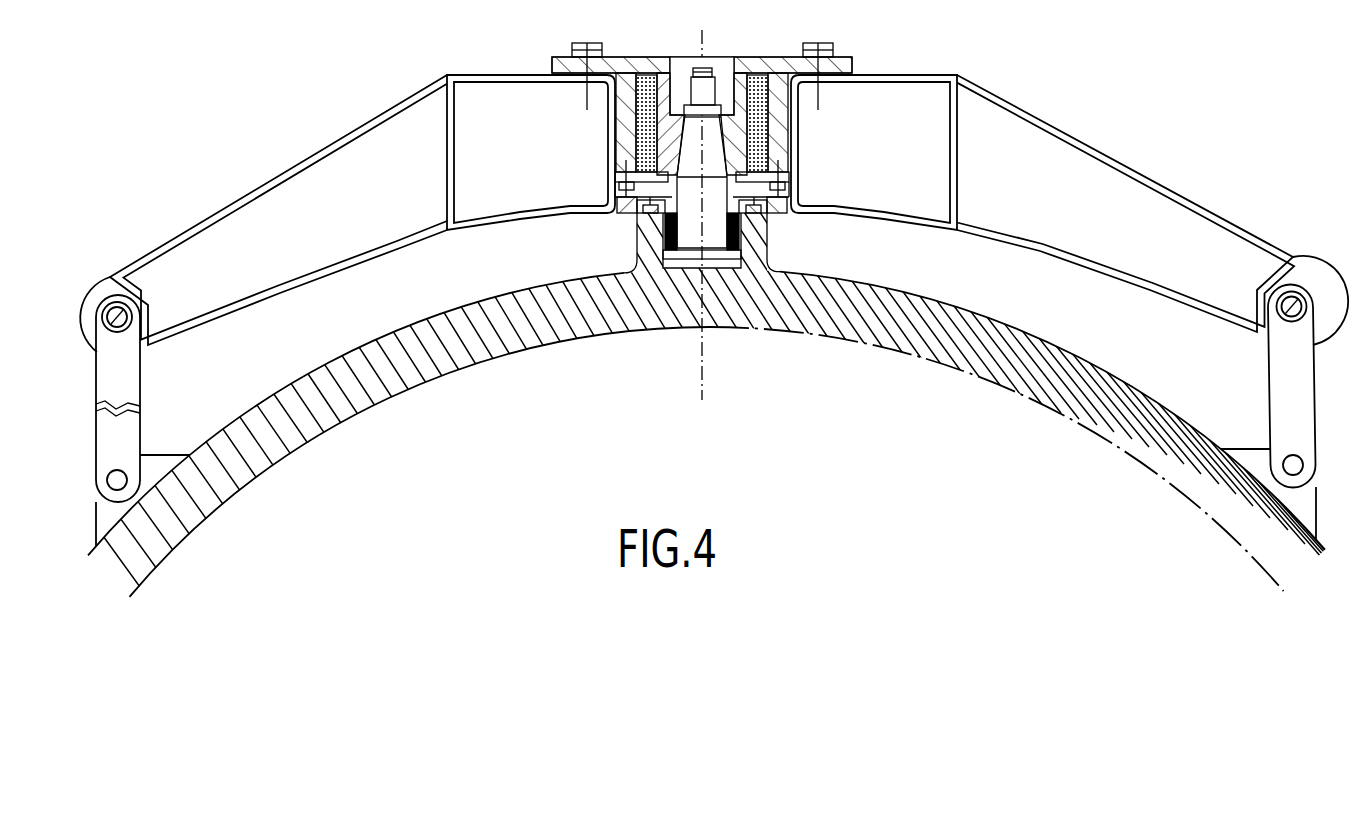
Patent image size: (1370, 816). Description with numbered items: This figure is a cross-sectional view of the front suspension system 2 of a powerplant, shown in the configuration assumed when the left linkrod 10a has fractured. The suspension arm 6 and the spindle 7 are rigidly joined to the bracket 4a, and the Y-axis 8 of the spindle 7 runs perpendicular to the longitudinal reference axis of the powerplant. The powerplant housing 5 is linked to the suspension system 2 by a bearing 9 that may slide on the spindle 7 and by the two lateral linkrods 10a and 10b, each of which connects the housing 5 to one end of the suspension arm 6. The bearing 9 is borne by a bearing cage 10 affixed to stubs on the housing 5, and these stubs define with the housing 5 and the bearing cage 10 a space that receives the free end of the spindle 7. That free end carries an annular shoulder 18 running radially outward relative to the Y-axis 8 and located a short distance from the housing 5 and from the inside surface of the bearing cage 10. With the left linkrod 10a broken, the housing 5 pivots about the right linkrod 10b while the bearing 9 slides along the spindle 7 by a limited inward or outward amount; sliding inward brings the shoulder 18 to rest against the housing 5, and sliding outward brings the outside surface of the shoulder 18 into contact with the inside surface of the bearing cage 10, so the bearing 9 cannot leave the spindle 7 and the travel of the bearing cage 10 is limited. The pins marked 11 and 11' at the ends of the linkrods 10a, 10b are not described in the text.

The front suspension system 2 is at (1092, 121).
The bracket 4a is at (620, 60).
The powerplant housing 5 is at (313, 363).
The suspension arm 6 is at (305, 192).
The spindle 7 is at (668, 243).
The Y-axis 8 is at (702, 53).
The bearing 9 is at (753, 243).
The bearing cage 10 is at (757, 242).
The left linkrod 10a is at (125, 388).
The right linkrod 10b is at (1288, 392).
The pivot pin 11 is at (711, 470).
The hinge pin 11' is at (733, 290).
The annular shoulder 18 is at (710, 258).